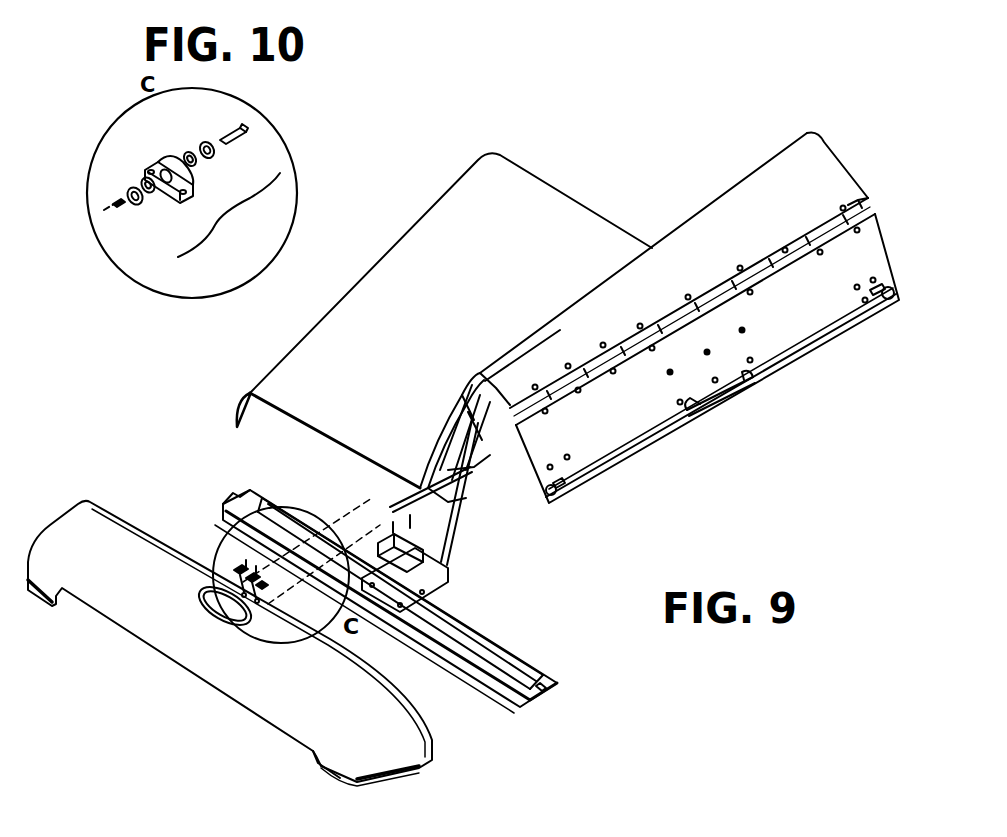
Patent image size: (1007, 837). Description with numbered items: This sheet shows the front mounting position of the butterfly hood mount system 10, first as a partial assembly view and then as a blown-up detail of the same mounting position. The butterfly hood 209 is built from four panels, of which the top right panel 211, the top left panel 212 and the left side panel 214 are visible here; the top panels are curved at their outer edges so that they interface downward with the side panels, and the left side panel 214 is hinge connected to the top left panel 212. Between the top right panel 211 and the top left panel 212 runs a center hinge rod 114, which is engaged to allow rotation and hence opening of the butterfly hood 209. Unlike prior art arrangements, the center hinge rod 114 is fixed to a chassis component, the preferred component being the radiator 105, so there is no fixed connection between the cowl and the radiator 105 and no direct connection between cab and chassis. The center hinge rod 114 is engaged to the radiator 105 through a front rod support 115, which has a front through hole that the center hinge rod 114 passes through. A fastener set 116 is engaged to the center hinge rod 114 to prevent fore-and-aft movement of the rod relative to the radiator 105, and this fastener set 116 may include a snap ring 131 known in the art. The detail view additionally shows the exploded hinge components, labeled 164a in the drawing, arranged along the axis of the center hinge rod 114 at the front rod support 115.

In FIG. 9, the butterfly hood mount system 10 is at (563, 585).
In FIG. 9, the radiator 105 is at (402, 748).
In FIG. 10, the center hinge rod 114 is at (244, 136).
In FIG. 9, the center hinge rod 114 is at (396, 499).
In FIG. 10, the front rod support 115 is at (168, 192).
In FIG. 10, the fastener set 116 is at (222, 216).
In FIG. 10, the snap ring 131 is at (120, 199).
In FIG. 10, the washers 164a is at (136, 178).
In FIG. 9, the butterfly hood 209 is at (641, 248).
In FIG. 9, the top right panel 211 is at (510, 184).
In FIG. 9, the top left panel 212 is at (768, 198).
In FIG. 9, the left side panel 214 is at (822, 304).